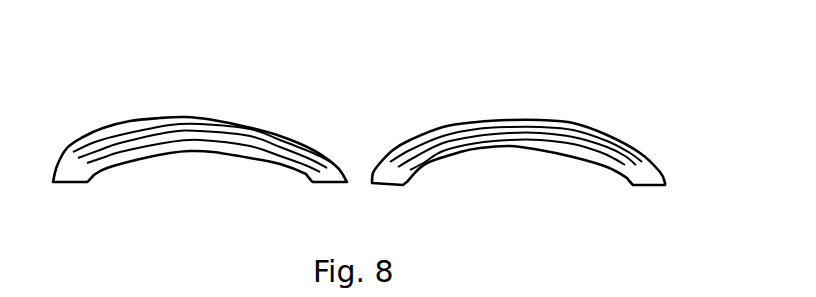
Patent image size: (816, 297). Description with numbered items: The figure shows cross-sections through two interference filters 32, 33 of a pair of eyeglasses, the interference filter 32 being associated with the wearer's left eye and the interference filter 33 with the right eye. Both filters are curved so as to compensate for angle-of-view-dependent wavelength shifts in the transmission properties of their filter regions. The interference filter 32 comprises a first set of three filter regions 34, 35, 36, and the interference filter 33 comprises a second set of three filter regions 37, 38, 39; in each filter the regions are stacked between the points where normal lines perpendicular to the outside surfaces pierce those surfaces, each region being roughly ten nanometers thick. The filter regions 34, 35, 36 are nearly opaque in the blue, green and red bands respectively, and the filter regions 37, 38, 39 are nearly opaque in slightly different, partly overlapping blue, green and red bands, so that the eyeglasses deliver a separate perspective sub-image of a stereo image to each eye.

The interference filter 32 is at (136, 64).
The interference filter 33 is at (590, 86).
The filter region 34 is at (143, 130).
The filter region 35 is at (206, 136).
The filter region 36 is at (183, 142).
The filter region 37 is at (595, 138).
The filter region 38 is at (533, 135).
The filter region 39 is at (575, 150).